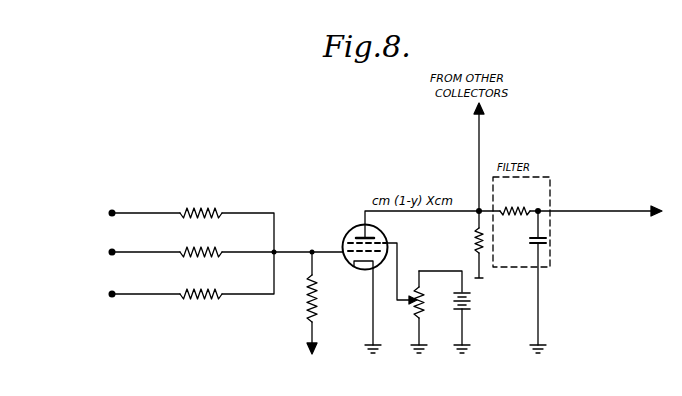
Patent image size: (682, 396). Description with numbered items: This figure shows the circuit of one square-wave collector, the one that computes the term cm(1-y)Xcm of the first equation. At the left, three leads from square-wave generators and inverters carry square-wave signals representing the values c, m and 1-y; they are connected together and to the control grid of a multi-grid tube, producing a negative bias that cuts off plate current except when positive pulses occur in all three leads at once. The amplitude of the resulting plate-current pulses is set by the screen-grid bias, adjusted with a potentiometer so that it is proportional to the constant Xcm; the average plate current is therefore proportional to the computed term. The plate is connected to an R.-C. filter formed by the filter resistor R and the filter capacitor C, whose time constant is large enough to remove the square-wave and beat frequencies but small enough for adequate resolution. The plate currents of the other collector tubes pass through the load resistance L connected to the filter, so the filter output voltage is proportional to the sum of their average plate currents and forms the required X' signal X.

The square-wave signal lead c is at (180, 229).
The square-wave signal lead m is at (212, 252).
The square-wave signal lead 1-y is at (176, 277).
The load resistance L is at (468, 244).
The filter resistor R is at (508, 202).
The filter capacitor C is at (533, 280).
The X' signal output X is at (600, 204).